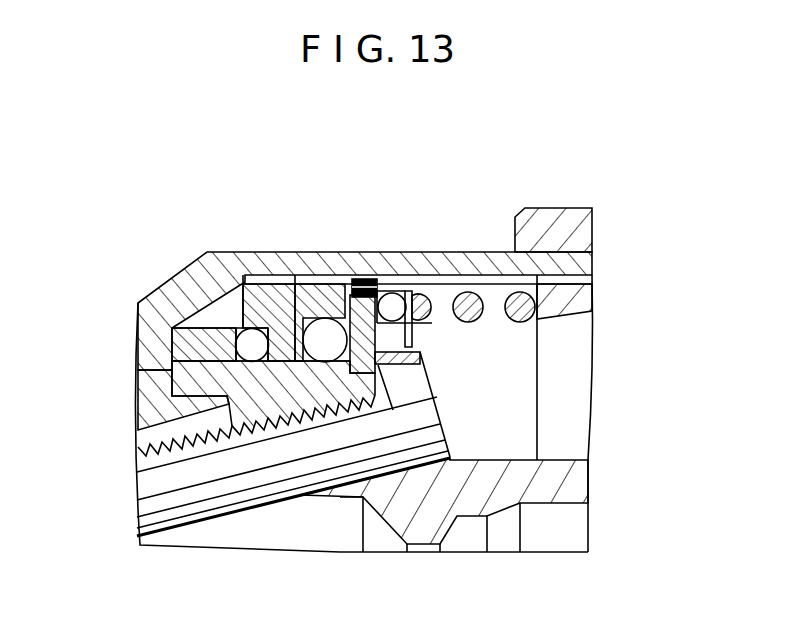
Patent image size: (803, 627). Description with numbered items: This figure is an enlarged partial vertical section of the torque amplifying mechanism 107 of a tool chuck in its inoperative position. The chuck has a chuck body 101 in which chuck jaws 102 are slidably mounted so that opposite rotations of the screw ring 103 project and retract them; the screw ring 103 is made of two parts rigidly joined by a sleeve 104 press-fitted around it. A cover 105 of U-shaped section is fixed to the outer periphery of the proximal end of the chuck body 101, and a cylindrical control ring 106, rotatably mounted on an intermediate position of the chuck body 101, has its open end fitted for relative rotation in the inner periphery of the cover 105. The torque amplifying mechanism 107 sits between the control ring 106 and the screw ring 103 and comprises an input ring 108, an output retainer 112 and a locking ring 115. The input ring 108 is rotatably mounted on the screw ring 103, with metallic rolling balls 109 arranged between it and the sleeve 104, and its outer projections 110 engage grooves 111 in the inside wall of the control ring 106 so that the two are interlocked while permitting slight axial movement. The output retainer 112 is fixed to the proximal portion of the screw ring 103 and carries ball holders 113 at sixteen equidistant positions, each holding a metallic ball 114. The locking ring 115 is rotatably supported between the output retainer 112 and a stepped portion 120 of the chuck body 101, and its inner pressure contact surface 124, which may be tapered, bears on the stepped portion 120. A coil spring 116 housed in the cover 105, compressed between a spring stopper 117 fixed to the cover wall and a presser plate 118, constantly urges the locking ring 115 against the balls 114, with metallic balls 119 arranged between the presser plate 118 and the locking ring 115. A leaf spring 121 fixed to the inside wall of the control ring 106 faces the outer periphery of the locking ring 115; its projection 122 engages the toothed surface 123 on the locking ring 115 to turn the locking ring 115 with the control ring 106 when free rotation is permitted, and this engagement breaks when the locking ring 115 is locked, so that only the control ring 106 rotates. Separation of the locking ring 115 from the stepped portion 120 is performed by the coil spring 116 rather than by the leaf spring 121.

The chuck body 101 is at (578, 477).
The chuck jaws 102 is at (165, 482).
The screw ring 103 is at (215, 380).
The sleeve 104 is at (182, 345).
The cover 105 is at (558, 205).
The control ring 106 is at (192, 257).
The torque amplifying mechanism 107 is at (253, 225).
The input ring 108 is at (252, 300).
The rolling balls 109 is at (238, 326).
The projections 110 is at (283, 291).
The grooves 111 is at (484, 280).
The output retainer 112 is at (309, 290).
The ball holders 113 is at (313, 286).
The balls 114 is at (286, 298).
The locking ring 115 is at (386, 343).
The coil spring 116 is at (540, 318).
The spring stopper 117 is at (568, 305).
The presser plate 118 is at (418, 327).
The balls 119 is at (410, 298).
The stepped portion 120 is at (423, 378).
The leaf spring 121 is at (360, 279).
The projection 122 is at (372, 298).
The toothed surface 123 is at (395, 292).
The pressure contact surface 124 is at (382, 372).